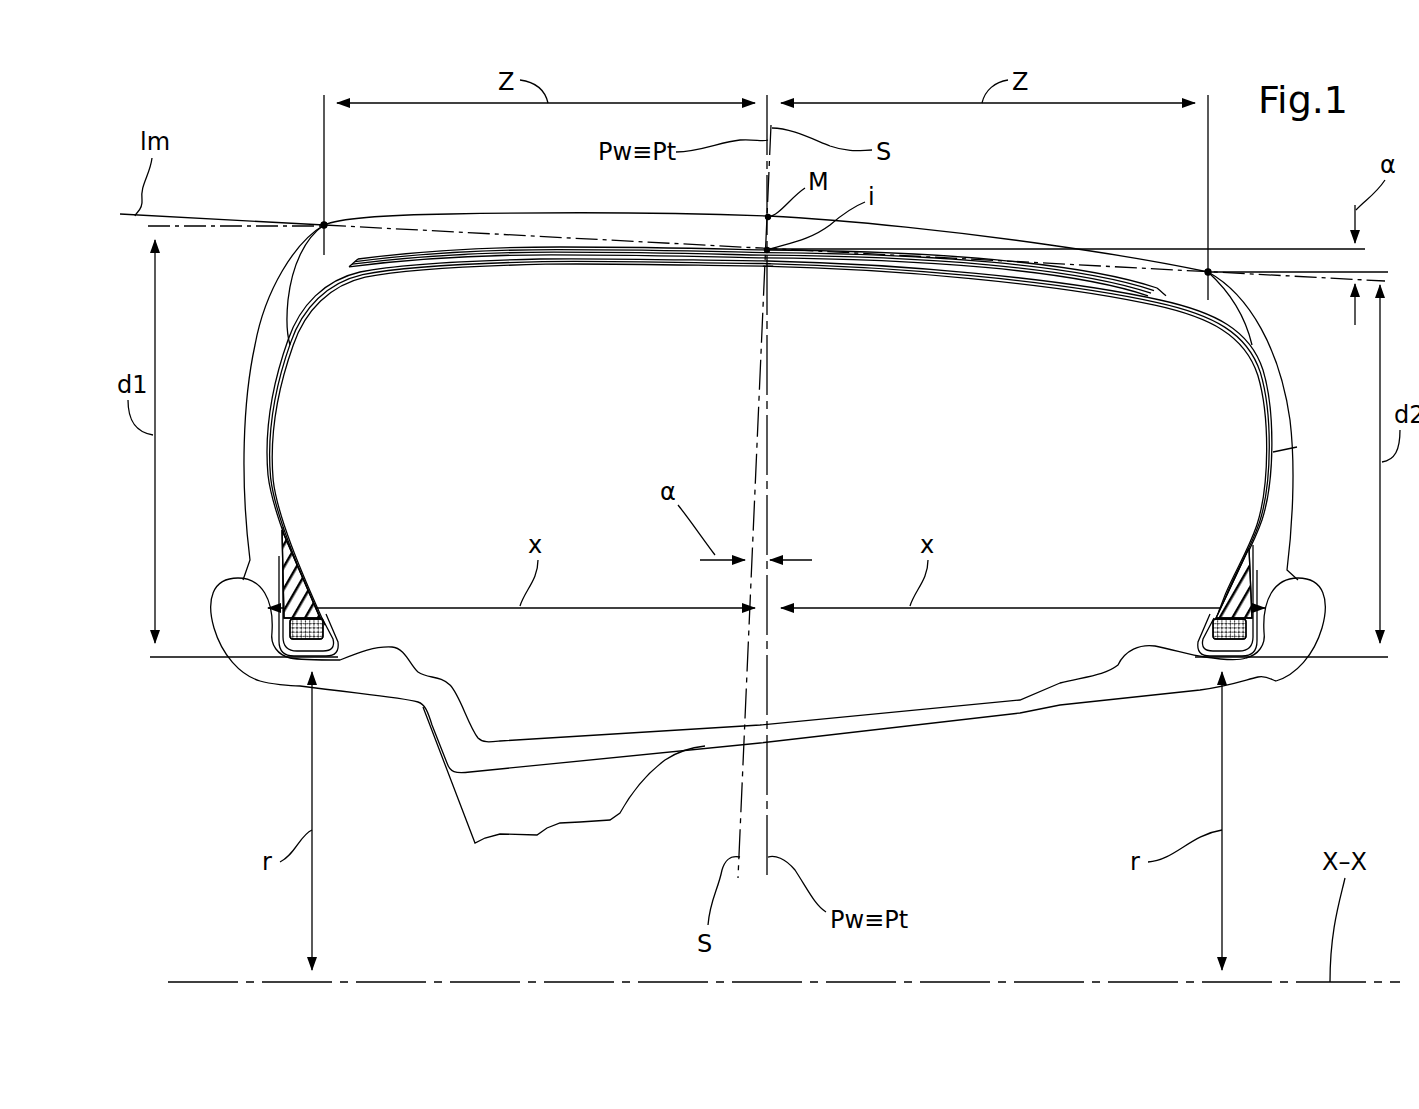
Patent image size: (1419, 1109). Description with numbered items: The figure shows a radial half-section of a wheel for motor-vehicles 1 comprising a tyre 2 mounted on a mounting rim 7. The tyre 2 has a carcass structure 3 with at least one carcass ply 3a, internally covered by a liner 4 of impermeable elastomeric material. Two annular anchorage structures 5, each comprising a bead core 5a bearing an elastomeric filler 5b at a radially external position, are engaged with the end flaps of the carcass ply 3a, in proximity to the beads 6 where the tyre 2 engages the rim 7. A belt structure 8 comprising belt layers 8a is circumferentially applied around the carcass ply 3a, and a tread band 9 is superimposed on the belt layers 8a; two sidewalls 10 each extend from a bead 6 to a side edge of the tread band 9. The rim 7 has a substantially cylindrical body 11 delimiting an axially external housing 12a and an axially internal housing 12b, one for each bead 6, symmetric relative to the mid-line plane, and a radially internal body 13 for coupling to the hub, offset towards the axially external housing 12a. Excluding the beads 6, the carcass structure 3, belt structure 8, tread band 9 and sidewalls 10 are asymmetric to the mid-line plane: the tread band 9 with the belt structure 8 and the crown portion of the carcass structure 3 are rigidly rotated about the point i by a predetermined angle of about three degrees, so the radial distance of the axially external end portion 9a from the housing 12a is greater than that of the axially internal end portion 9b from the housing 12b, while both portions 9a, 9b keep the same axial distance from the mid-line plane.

The wheel for motor-vehicles 1 is at (210, 820).
The tyre 2 is at (266, 208).
The carcass structure 3 is at (1276, 413).
The carcass ply 3a is at (1285, 449).
The liner 4 is at (478, 268).
The annular anchorage structure 5 is at (316, 572).
The bead core 5a is at (285, 652).
The elastomeric filler 5b is at (290, 552).
The bead 6 is at (346, 588).
The mounting rim 7 is at (420, 834).
The belt structure 8 is at (1168, 288).
The belt layer 8a is at (349, 266).
The tread band 9 is at (946, 230).
The axially external axial end portion of the tread band 9a is at (324, 225).
The axially internal axial end portion of the tread band 9b is at (1208, 272).
The sidewall 10 is at (255, 372).
The substantially cylindrical body 11 is at (928, 730).
The axially external housing 12a is at (272, 632).
The axially internal housing 12b is at (1264, 632).
The radially internal body 13 is at (642, 793).